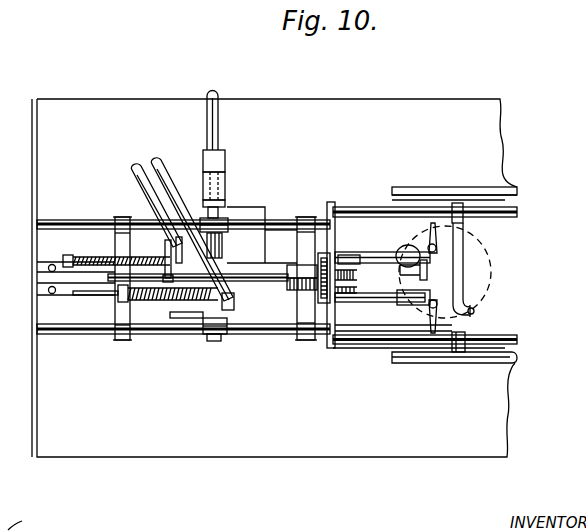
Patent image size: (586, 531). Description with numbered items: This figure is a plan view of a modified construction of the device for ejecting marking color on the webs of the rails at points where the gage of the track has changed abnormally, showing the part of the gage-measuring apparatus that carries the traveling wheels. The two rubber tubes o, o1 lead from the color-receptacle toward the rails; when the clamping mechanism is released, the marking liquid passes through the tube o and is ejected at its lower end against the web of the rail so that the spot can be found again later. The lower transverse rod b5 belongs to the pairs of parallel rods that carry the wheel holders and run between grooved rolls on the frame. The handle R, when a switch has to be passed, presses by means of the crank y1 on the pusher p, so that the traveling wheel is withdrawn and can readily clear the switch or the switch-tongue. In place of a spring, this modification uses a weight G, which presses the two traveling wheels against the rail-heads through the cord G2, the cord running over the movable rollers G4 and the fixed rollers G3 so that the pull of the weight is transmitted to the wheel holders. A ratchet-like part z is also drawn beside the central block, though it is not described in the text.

The rubber tube o1 is at (139, 186).
The rubber tube o is at (163, 175).
The handle R is at (220, 128).
The pusher p is at (276, 217).
The transverse rod b5 is at (358, 213).
The movable roller G4 is at (360, 258).
The fixed roller G3 is at (412, 322).
The weight G is at (488, 260).
The ratchet z is at (316, 292).
The cord G2 is at (378, 295).
The crank y1 is at (213, 341).